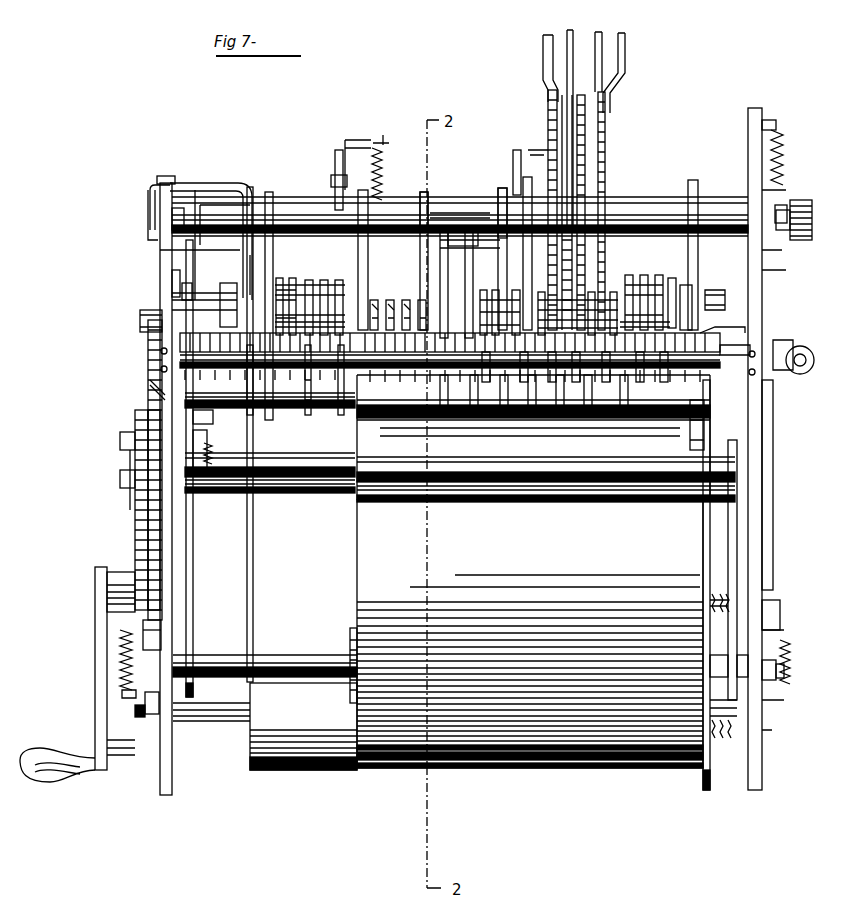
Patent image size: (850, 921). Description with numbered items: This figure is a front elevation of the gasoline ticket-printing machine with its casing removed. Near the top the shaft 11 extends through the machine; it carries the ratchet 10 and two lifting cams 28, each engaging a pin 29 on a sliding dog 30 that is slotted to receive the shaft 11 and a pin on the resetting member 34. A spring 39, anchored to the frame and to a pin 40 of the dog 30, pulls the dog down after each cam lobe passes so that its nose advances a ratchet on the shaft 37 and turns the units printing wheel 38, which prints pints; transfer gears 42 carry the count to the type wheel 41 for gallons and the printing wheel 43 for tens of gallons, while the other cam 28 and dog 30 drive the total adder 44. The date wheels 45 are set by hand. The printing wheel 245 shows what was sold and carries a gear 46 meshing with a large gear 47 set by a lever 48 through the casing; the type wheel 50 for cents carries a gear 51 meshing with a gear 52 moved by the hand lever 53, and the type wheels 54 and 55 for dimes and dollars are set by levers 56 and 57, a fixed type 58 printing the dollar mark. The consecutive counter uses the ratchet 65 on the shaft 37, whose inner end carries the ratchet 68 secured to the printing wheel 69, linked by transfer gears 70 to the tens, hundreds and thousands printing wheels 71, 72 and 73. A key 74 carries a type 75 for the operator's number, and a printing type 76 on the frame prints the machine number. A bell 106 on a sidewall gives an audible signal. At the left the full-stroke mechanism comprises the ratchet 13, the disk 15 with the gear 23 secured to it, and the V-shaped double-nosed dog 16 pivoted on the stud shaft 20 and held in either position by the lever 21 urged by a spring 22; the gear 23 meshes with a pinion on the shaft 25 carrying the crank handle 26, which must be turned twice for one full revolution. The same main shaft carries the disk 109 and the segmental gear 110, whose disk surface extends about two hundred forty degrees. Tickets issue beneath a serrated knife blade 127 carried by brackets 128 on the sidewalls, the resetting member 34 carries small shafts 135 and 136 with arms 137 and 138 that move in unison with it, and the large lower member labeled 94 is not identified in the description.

The ratchet 10 is at (808, 200).
The shaft 11 is at (429, 198).
The ratchet 13 is at (138, 508).
The disk 15 is at (145, 460).
The double-nosed dog 16 is at (138, 632).
The stud shaft 20 is at (157, 713).
The lever 21 is at (138, 713).
The spring 22 is at (118, 668).
The gear 23 is at (145, 443).
The shaft 25 is at (118, 580).
The crank handle 26 is at (95, 697).
The lifting cams 28 is at (337, 160).
The pin 29 is at (333, 180).
The sliding dog 30 is at (352, 140).
The resetting member 34 is at (500, 190).
The shaft 37 is at (142, 340).
The units printing wheel 38 is at (505, 418).
The spring 39 is at (383, 165).
The pin 40 is at (535, 150).
The type wheel 41 is at (476, 418).
The transfer gears 42 is at (487, 368).
The printing wheel 43 is at (444, 418).
The total adder 44 is at (308, 391).
The date wheels 45 is at (415, 298).
The gear 46 is at (606, 368).
The large gear 47 is at (606, 148).
The lever 48 is at (625, 50).
The type wheel 50 is at (561, 418).
The gear 51 is at (576, 368).
The gear 52 is at (590, 128).
The hand lever 53 is at (602, 32).
The type wheel 54 is at (552, 368).
The type wheel 55 is at (533, 418).
The lever 56 is at (567, 30).
The lever 57 is at (543, 45).
The type 58 is at (524, 368).
The ratchet 65 is at (145, 314).
The ratchet 68 is at (693, 303).
The printing wheel 69 is at (673, 282).
The transfer gears 70 is at (645, 278).
The printing wheel 71 is at (661, 368).
The printing wheel 72 is at (637, 368).
The printing wheel 73 is at (628, 418).
The key 74 is at (788, 368).
The type 75 is at (697, 422).
The printing type 76 is at (255, 391).
The drum 94 is at (364, 557).
The bell 106 is at (205, 250).
The disk 109 is at (150, 407).
The segmental gear 110 is at (153, 526).
The serrated knife blade 127 is at (340, 391).
The brackets 128 is at (162, 367).
The small shaft 135 is at (452, 215).
The small shaft 136 is at (448, 268).
The arm 137 is at (475, 252).
The arm 138 is at (460, 247).
The printing wheel 245 is at (587, 418).